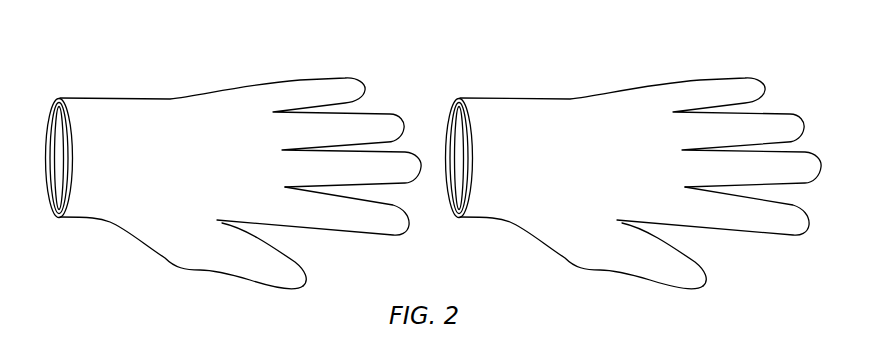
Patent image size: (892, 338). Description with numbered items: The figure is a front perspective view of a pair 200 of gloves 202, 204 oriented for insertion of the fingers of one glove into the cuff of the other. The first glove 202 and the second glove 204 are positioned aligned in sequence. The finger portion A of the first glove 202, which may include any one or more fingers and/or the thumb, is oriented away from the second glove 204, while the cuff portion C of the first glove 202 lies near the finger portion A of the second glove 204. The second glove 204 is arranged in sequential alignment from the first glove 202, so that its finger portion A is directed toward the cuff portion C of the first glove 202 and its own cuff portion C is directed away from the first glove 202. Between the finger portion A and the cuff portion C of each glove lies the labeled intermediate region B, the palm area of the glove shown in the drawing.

The pair of gloves 200 is at (750, 58).
The first glove 202 is at (568, 98).
The second glove 204 is at (168, 98).
The finger portion A is at (386, 235).
The palm region B is at (143, 243).
The cuff portion C is at (58, 220).